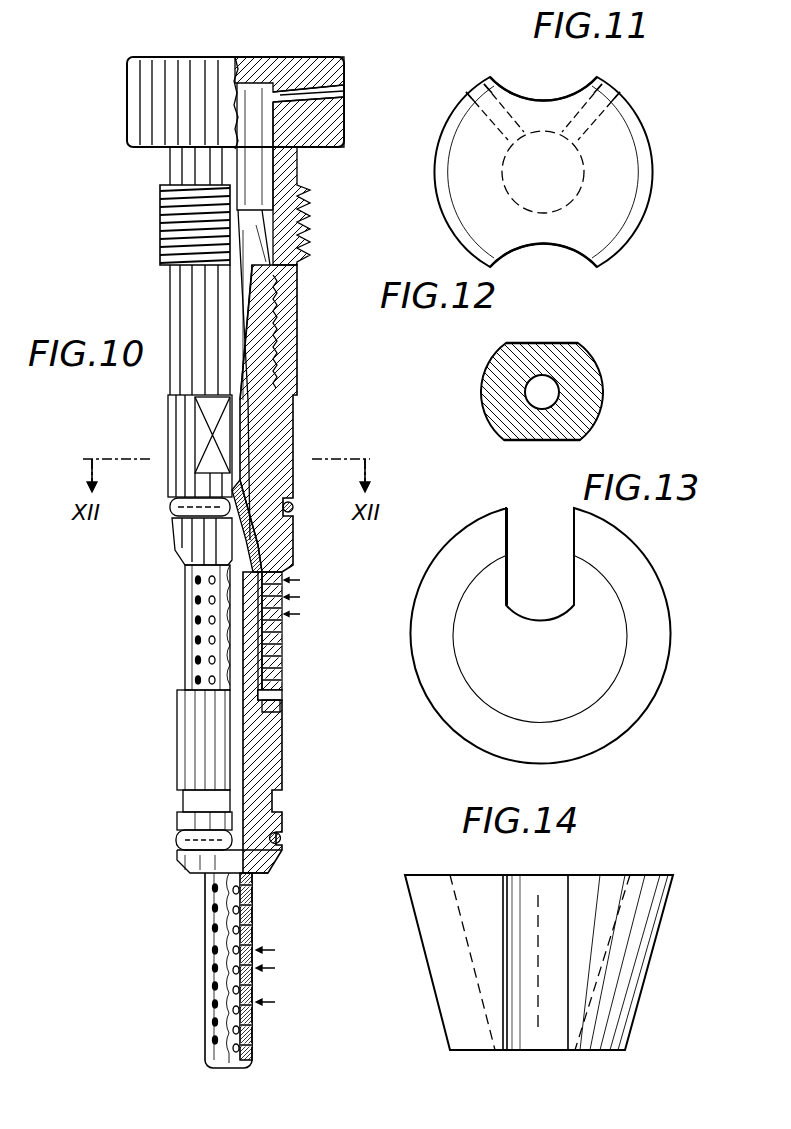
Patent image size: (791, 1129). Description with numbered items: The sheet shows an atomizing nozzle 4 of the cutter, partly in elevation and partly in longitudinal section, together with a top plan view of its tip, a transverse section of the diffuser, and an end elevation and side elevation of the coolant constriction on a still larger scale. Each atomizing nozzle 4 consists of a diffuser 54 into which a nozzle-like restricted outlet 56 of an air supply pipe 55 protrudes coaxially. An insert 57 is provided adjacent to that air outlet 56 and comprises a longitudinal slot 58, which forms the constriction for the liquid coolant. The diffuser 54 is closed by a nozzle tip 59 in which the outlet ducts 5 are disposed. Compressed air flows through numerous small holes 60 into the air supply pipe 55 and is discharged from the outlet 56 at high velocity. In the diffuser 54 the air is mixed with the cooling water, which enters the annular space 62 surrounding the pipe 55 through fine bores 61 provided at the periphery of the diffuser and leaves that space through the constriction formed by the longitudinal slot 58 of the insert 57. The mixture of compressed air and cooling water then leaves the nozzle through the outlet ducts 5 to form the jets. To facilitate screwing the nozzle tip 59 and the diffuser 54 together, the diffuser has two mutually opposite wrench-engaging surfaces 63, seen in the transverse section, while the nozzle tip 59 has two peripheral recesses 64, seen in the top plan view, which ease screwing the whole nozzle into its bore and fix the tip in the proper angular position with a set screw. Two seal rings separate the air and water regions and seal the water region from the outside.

In FIG. 10, the atomizing nozzle 4 is at (158, 292).
In FIG. 10, the outlet ducts 5 is at (307, 92).
In FIG. 11, the outlet ducts 5 is at (500, 128).
In FIG. 10, the diffuser 54 is at (265, 445).
In FIG. 12, the diffuser 54 is at (580, 388).
In FIG. 10, the air supply pipe 55 is at (252, 762).
In FIG. 10, the restricted outlet 56 is at (245, 542).
In FIG. 10, the insert 57 is at (258, 535).
In FIG. 13, the insert 57 is at (548, 712).
In FIG. 14, the insert 57 is at (437, 922).
In FIG. 13, the longitudinal slot 58 is at (538, 565).
In FIG. 14, the longitudinal slot 58 is at (544, 970).
In FIG. 10, the nozzle tip 59 is at (284, 213).
In FIG. 11, the nozzle tip 59 is at (598, 207).
In FIG. 10, the small holes 60 is at (215, 983).
In FIG. 10, the fine bores 61 is at (200, 635).
In FIG. 10, the annular space 62 is at (259, 688).
In FIG. 10, the wrench-engaging surfaces 63 is at (205, 435).
In FIG. 12, the wrench-engaging surfaces 63 is at (544, 343).
In FIG. 10, the peripheral recesses 64 is at (207, 108).
In FIG. 11, the peripheral recesses 64 is at (553, 90).